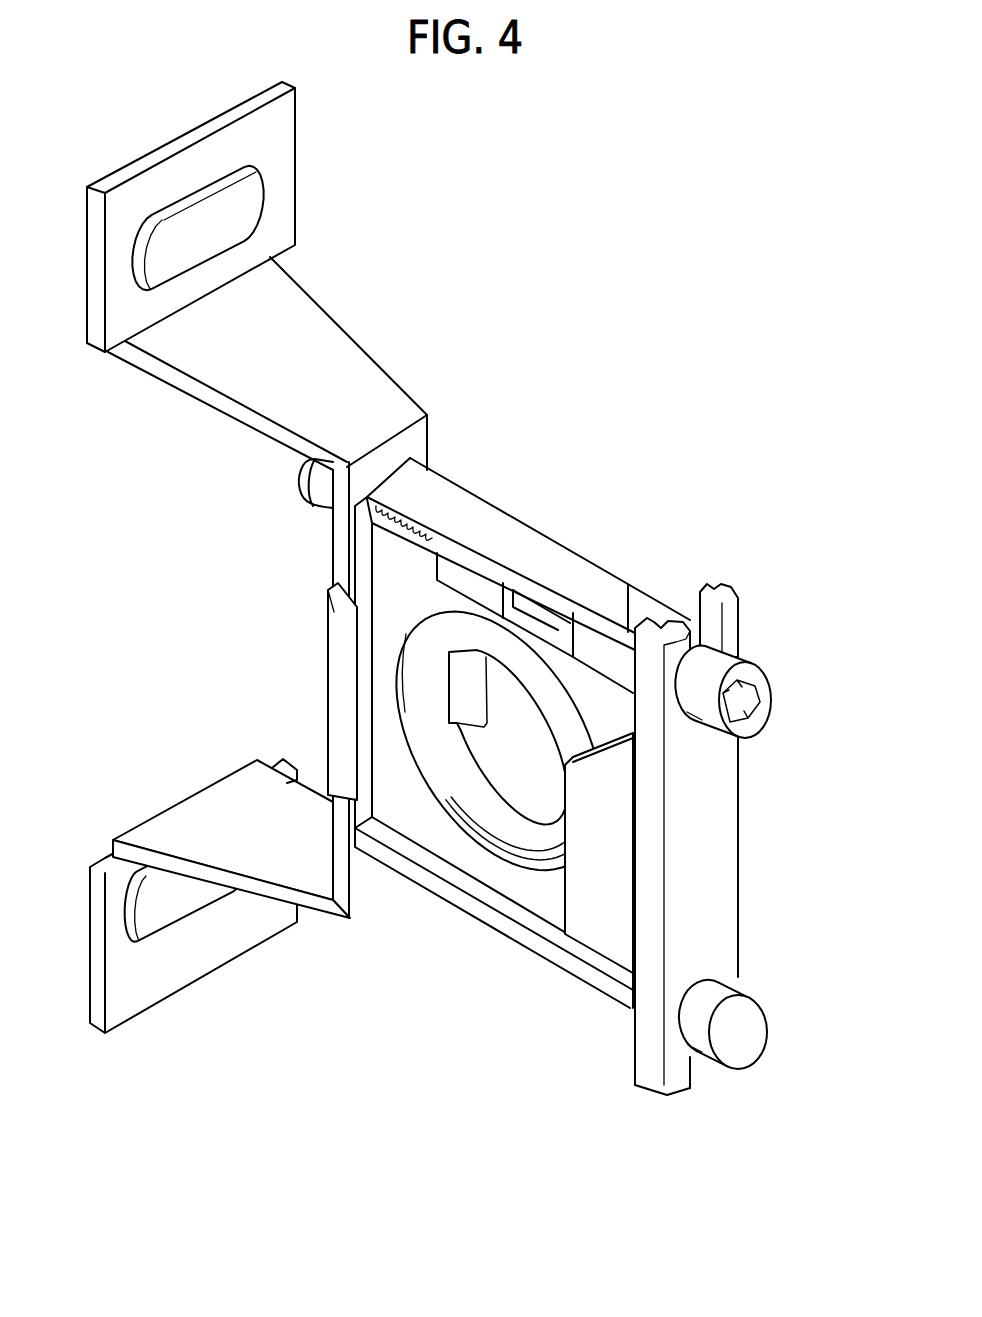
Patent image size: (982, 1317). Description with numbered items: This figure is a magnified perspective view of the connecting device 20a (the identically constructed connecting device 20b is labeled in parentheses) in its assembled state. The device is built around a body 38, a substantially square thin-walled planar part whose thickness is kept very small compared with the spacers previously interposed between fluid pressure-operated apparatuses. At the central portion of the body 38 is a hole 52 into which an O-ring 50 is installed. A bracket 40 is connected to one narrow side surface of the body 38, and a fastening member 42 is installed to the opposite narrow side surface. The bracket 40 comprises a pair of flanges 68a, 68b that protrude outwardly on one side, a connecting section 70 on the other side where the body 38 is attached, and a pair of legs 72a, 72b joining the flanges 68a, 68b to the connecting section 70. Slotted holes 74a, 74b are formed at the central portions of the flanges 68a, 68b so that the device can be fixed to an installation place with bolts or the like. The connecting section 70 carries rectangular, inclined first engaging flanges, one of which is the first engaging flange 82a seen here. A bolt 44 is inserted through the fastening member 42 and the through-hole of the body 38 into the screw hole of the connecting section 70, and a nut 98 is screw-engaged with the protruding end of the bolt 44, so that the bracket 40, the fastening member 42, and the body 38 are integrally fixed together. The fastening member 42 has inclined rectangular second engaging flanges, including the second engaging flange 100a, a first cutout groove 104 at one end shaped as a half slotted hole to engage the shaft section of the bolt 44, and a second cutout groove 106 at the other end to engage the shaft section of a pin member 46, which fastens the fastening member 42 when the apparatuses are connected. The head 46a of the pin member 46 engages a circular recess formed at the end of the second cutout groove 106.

The connecting device 20a is at (572, 323).
The connecting device 20b is at (630, 323).
The body 38 is at (590, 552).
The bracket 40 is at (309, 212).
The fastening member 42 is at (740, 835).
The bolt 44 is at (761, 657).
The pin member 46 is at (763, 1030).
The head 46a is at (735, 980).
The O-ring 50 is at (510, 827).
The hole 52 is at (493, 753).
The flange 68a is at (258, 142).
The flange 68b is at (212, 952).
The connecting section 70 is at (413, 452).
The leg 72a is at (318, 358).
The leg 72b is at (225, 807).
The slotted hole 74a is at (135, 326).
The slotted hole 74b is at (133, 910).
The first engaging flange 82a is at (326, 692).
The nut 98 is at (320, 497).
The second engaging flange 100a is at (598, 897).
The first cutout groove 104 is at (717, 623).
The second cutout groove 106 is at (690, 1080).